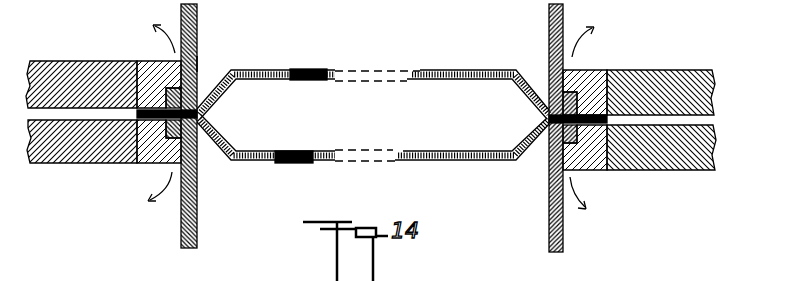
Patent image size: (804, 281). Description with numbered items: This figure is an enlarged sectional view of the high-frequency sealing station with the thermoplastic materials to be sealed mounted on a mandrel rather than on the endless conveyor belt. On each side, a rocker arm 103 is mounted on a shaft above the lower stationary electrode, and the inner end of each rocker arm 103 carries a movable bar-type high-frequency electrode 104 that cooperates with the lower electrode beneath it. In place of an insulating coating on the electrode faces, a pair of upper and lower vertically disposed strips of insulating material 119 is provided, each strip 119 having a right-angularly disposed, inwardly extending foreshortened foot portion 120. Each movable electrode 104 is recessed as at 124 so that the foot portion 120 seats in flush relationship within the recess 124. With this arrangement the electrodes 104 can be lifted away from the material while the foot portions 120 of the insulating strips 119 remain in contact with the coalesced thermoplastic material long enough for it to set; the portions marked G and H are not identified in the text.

The rocker arm 103 is at (107, 61).
The bar-type high-frequency electrode 104 is at (165, 61).
The strip of insulating material 119 is at (549, 45).
The foot portion 120 is at (199, 79).
The recess 124 is at (198, 62).
The upper strip portion G is at (301, 61).
The lower strip portion H is at (280, 162).